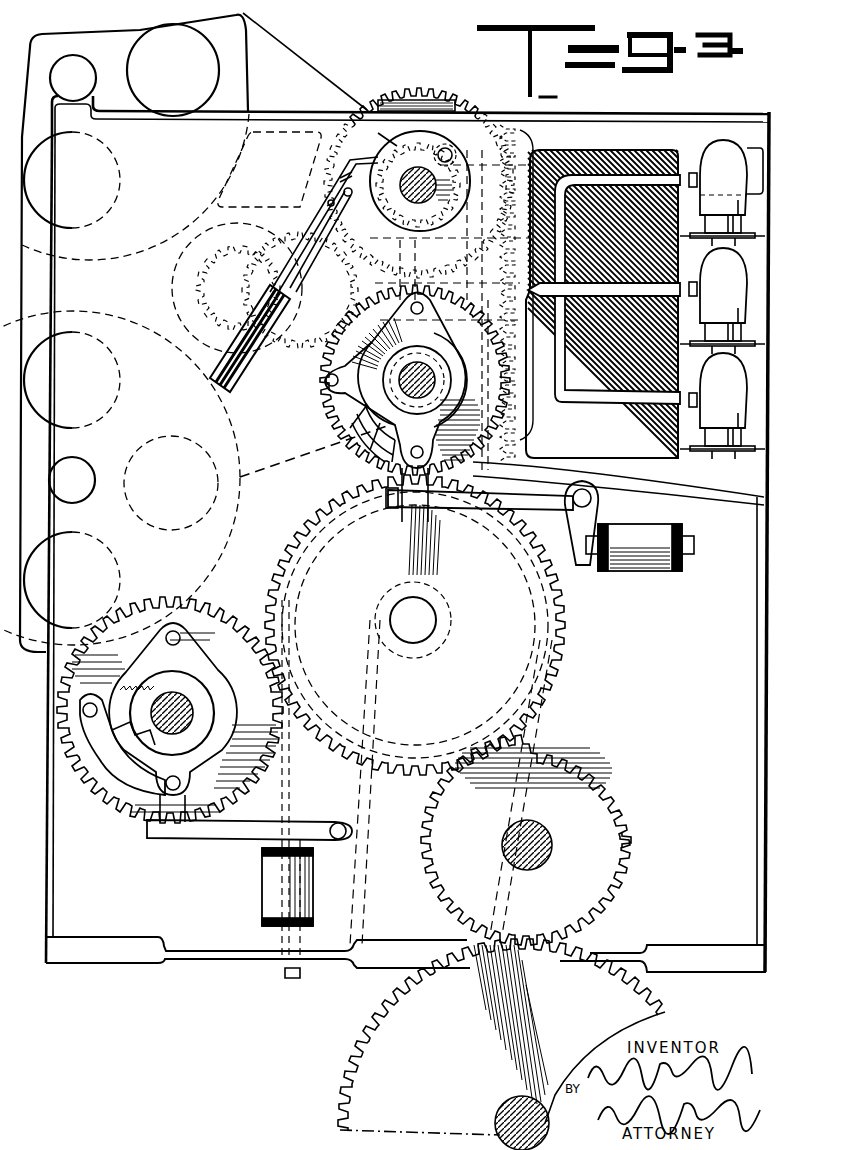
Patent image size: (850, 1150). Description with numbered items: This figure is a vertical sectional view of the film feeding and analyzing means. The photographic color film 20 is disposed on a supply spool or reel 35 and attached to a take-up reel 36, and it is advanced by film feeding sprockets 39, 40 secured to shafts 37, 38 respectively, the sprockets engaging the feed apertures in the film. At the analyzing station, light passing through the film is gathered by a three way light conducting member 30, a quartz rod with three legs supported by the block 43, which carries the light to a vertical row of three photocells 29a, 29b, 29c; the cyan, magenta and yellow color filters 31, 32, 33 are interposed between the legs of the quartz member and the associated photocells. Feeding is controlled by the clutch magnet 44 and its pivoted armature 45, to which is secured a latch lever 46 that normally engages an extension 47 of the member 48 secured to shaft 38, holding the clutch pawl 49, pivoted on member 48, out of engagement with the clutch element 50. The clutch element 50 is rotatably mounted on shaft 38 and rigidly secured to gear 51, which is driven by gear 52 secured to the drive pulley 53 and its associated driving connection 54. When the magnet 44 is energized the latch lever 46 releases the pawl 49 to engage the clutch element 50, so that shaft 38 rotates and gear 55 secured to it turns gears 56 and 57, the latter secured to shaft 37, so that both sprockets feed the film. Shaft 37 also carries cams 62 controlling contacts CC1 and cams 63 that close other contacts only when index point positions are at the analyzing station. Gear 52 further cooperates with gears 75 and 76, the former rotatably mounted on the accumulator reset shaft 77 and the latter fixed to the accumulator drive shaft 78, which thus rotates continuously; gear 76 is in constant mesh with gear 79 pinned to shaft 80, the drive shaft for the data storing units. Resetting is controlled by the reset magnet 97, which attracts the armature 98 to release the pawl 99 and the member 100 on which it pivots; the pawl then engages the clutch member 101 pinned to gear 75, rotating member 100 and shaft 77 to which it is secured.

The photographic color film 20 is at (262, 33).
The supply spool or reel 35 is at (250, 87).
The take-up reel 36 is at (92, 316).
The shaft 37 is at (407, 173).
The film feeding sprocket 39 is at (428, 152).
The gear 57 is at (382, 100).
The cam 62 is at (372, 135).
The cam 63 is at (398, 222).
The contacts CC1 is at (322, 181).
The gear 56 is at (185, 258).
The gear 55 is at (318, 380).
The block 43 is at (616, 150).
The three way light conducting member 30 is at (560, 285).
The color filter 31 is at (692, 172).
The color filter 32 is at (694, 297).
The color filter 33 is at (694, 407).
The photocell 29a is at (722, 193).
The photocell 29b is at (722, 301).
The photocell 29c is at (722, 406).
The film feeding sprocket 40 is at (350, 478).
The clutch element 50 is at (345, 440).
The gear 51 is at (472, 455).
The extension 47 is at (420, 490).
The member 48 is at (365, 495).
The clutch pawl 49 is at (396, 510).
The latch lever 46 is at (540, 503).
The pivoted armature 45 is at (598, 500).
The shaft 38 is at (575, 470).
The clutch magnet 44 is at (640, 572).
The gear 52 is at (300, 512).
The drive pulley 53 is at (556, 632).
The gear 75 is at (235, 605).
The clutch member 101 is at (222, 697).
The shaft 77 is at (190, 715).
The member 100 is at (186, 648).
The pawl 99 is at (94, 772).
The armature 98 is at (224, 838).
The reset magnet 97 is at (268, 892).
The gear 76 is at (618, 892).
The driving connection 54 is at (540, 724).
The shaft 78 is at (555, 845).
The gear 79 is at (393, 1001).
The shaft 80 is at (500, 1125).